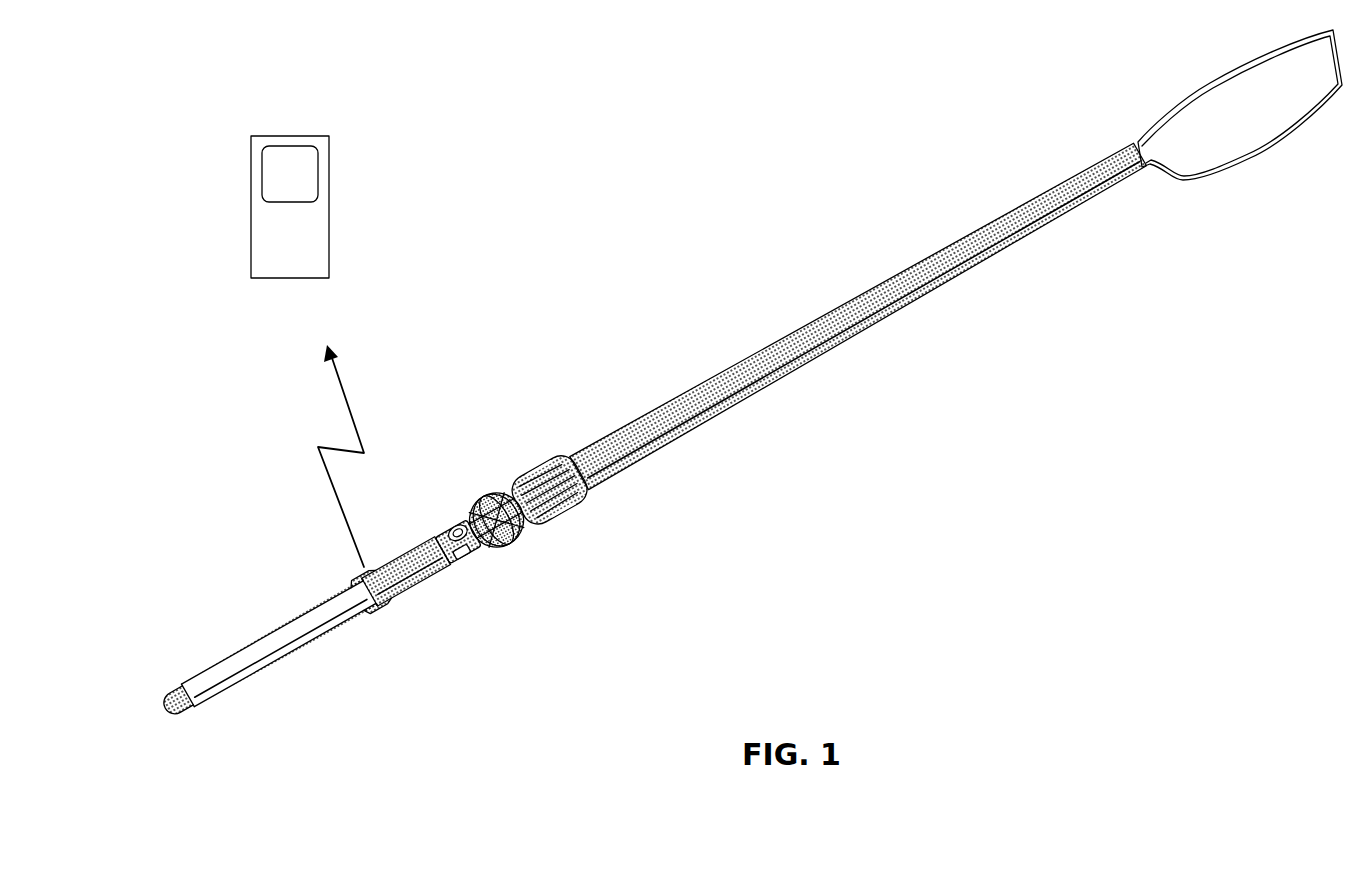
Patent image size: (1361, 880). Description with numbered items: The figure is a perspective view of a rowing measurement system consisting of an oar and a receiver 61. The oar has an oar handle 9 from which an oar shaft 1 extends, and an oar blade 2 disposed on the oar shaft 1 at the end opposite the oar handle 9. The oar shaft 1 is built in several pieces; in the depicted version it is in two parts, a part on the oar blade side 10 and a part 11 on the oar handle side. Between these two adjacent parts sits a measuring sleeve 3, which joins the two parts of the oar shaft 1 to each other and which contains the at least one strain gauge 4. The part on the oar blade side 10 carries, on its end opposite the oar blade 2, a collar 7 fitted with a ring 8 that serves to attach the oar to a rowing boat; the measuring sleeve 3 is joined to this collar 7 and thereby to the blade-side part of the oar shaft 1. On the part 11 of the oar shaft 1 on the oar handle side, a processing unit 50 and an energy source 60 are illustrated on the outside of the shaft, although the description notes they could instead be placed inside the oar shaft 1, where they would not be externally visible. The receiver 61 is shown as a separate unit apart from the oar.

The oar shaft 1 is at (920, 449).
The oar blade 2 is at (1240, 138).
The measuring sleeve 3 is at (462, 527).
The strain gauge 4 is at (466, 553).
The collar 7 is at (560, 504).
The ring 8 is at (515, 545).
The oar handle 9 is at (205, 712).
The part on the oar blade side 10 is at (1062, 122).
The part on the oar handle side 11 is at (317, 590).
The processing unit 50 is at (383, 645).
The energy source 60 is at (430, 615).
The receiver 61 is at (261, 140).